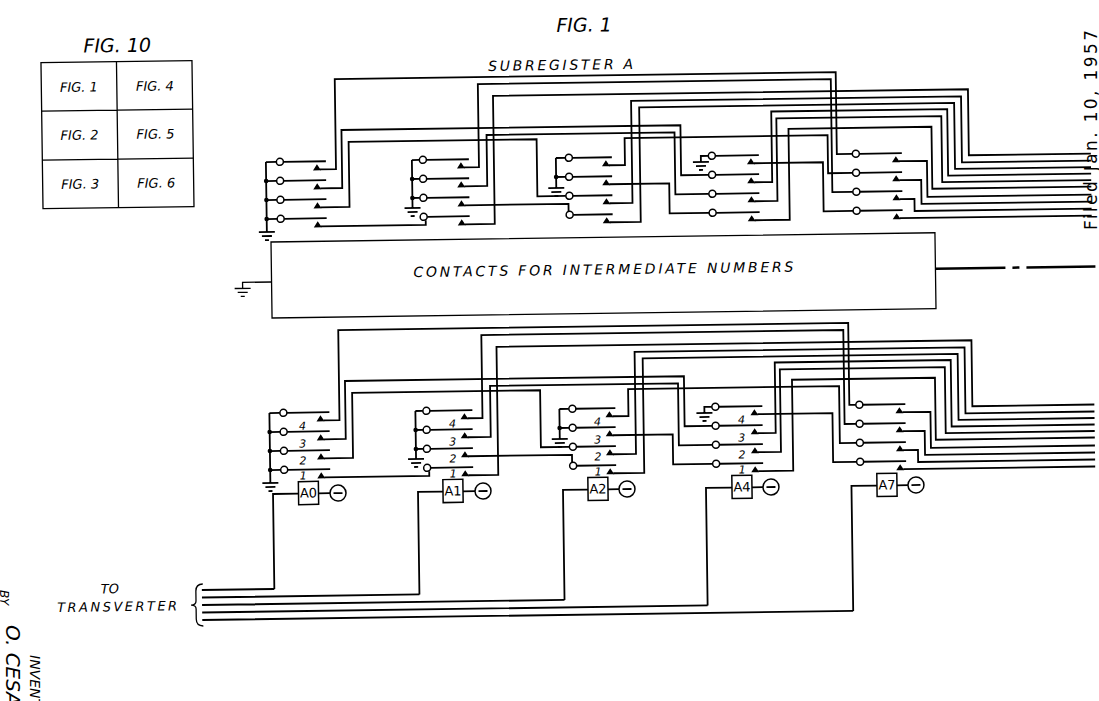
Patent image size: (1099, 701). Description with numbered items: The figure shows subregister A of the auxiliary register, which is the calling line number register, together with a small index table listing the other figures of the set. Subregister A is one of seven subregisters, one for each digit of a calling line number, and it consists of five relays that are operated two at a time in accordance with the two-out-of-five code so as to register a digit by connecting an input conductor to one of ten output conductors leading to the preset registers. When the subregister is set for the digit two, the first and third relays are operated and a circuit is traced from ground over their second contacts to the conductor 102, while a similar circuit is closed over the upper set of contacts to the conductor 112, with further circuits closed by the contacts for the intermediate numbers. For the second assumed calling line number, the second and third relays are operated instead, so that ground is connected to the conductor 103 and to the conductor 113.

The conductor 112 is at (1020, 172).
The conductor 113 is at (1048, 178).
The conductor 102 is at (1011, 423).
The conductor 103 is at (1048, 430).